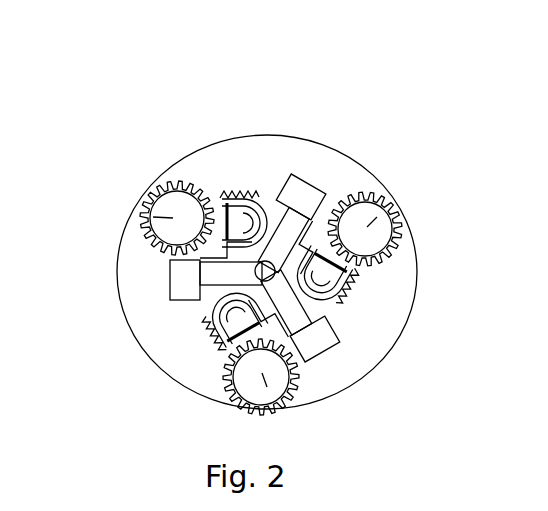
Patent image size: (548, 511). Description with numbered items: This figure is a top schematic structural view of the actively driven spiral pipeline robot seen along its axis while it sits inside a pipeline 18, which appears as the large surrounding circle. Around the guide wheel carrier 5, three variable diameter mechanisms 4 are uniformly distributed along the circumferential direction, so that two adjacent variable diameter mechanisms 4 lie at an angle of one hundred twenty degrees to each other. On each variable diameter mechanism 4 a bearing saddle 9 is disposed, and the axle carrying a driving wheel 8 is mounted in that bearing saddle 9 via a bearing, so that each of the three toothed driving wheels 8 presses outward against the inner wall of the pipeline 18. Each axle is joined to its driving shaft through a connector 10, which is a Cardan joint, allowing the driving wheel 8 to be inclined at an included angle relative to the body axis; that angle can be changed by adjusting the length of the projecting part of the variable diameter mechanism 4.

The pipeline 18 is at (234, 272).
The driving wheel 8 is at (199, 168).
The connector 10 is at (265, 164).
The variable diameter mechanism 4 is at (271, 213).
The bearing saddle 9 is at (368, 278).
The guide wheel carrier 5 is at (370, 339).